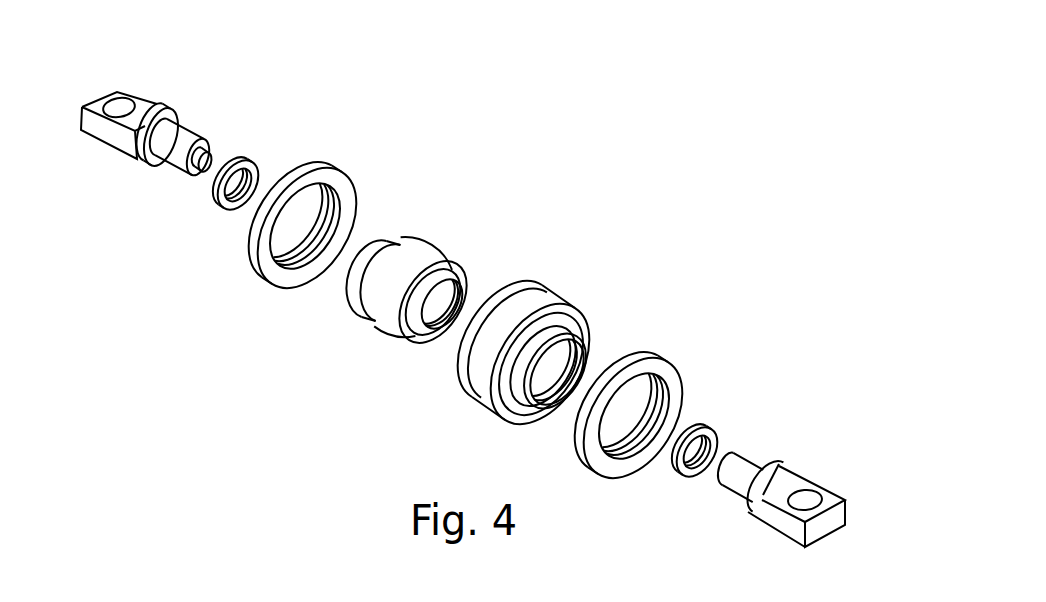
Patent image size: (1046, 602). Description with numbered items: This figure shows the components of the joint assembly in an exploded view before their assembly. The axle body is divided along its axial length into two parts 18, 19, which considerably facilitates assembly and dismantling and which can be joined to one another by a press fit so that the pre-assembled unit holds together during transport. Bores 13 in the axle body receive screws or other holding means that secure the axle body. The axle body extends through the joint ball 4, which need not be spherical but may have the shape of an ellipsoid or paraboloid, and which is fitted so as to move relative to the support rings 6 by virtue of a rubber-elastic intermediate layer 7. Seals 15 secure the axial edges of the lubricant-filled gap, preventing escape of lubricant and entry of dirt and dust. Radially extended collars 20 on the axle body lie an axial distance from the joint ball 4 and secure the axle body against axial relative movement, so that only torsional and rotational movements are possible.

The bores 13 is at (118, 104).
The collars 20 is at (157, 112).
The part of the axle body 18 is at (180, 143).
The seals 15 is at (243, 165).
The support ring 6 is at (323, 170).
The joint ball 4 is at (432, 256).
The rubber-elastic intermediate layer 7 is at (533, 299).
The part of the axle body 19 is at (799, 484).